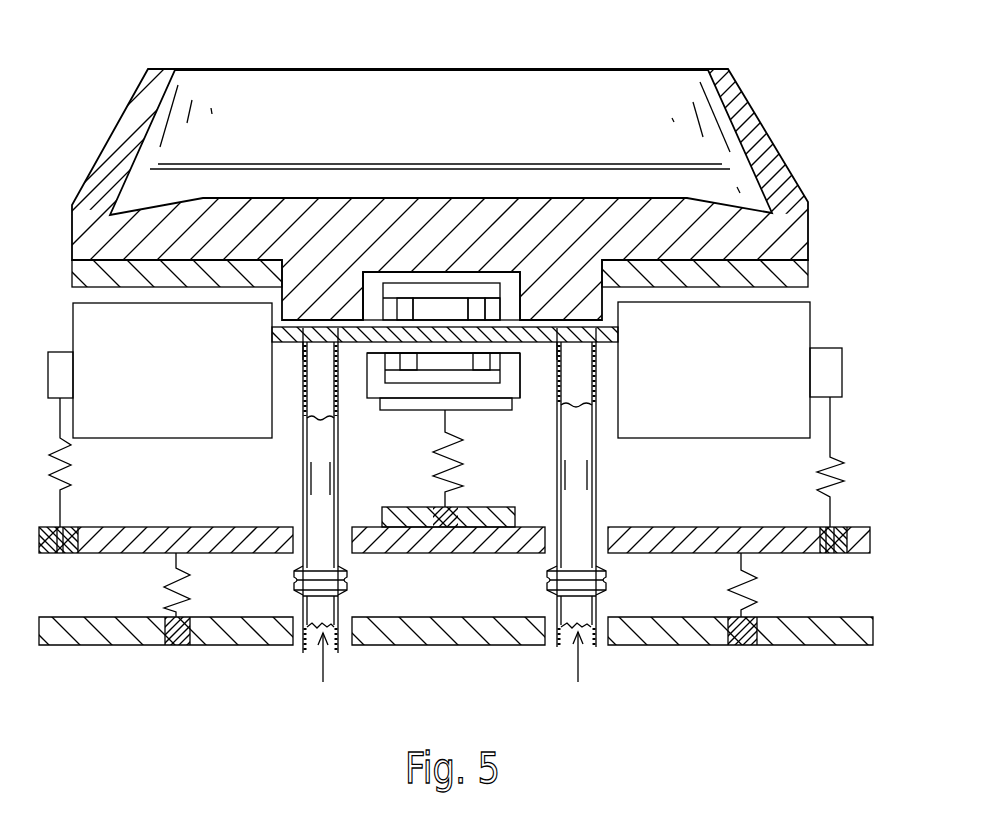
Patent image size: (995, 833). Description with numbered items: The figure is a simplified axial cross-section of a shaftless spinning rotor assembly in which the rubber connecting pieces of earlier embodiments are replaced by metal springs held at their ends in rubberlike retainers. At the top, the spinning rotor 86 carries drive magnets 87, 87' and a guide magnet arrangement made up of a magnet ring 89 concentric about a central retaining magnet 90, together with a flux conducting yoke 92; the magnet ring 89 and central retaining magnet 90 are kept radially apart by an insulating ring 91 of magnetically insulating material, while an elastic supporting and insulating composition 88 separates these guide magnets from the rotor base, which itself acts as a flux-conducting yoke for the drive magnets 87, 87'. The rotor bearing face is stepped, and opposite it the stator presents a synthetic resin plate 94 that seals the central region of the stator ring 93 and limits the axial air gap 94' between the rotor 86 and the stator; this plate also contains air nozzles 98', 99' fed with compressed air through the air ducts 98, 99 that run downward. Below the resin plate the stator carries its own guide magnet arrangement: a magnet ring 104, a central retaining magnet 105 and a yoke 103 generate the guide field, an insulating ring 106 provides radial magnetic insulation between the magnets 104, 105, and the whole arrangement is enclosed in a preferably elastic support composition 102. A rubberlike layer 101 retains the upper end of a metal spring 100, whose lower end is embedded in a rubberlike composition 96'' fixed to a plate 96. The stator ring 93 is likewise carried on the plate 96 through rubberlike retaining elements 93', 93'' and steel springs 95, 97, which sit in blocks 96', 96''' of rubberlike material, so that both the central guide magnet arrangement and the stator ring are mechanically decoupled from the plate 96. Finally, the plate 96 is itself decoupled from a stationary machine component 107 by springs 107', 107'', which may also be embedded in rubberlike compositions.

The spinning rotor 86 is at (767, 85).
The drive magnet 87 is at (728, 270).
The drive magnet 87' is at (155, 273).
The elastic supporting and insulating composition 88 is at (495, 310).
The magnet ring 89 is at (518, 283).
The central retaining magnet 90 is at (432, 307).
The insulating ring 91 is at (480, 303).
The flux conducting yoke 92 is at (442, 290).
The stator ring 93 is at (477, 394).
The rubberlike retaining element 93' is at (40, 372).
The rubberlike retaining element 93'' is at (858, 366).
The synthetic resin plate 94 is at (447, 388).
The axial air gap 94' is at (619, 319).
The steel spring 95 is at (49, 478).
The plate 96 is at (452, 564).
The block of rubberlike material 96' is at (60, 561).
The rubberlike composition 96'' is at (447, 551).
The block of rubberlike material 96''' is at (851, 565).
The steel spring 97 is at (843, 490).
The air duct 98 is at (303, 505).
The air nozzle 98' is at (260, 349).
The air duct 99 is at (604, 505).
The air nozzle 99' is at (618, 349).
The metal spring 100 is at (463, 472).
The rubberlike layer 101 is at (488, 405).
The elastic support composition 102 is at (517, 385).
The yoke 103 is at (462, 378).
The magnet ring 104 is at (375, 355).
The central retaining magnet 105 is at (428, 362).
The insulating ring 106 is at (408, 362).
The stationary machine component 107 is at (460, 657).
The spring 107' is at (209, 585).
The spring 107'' is at (781, 585).